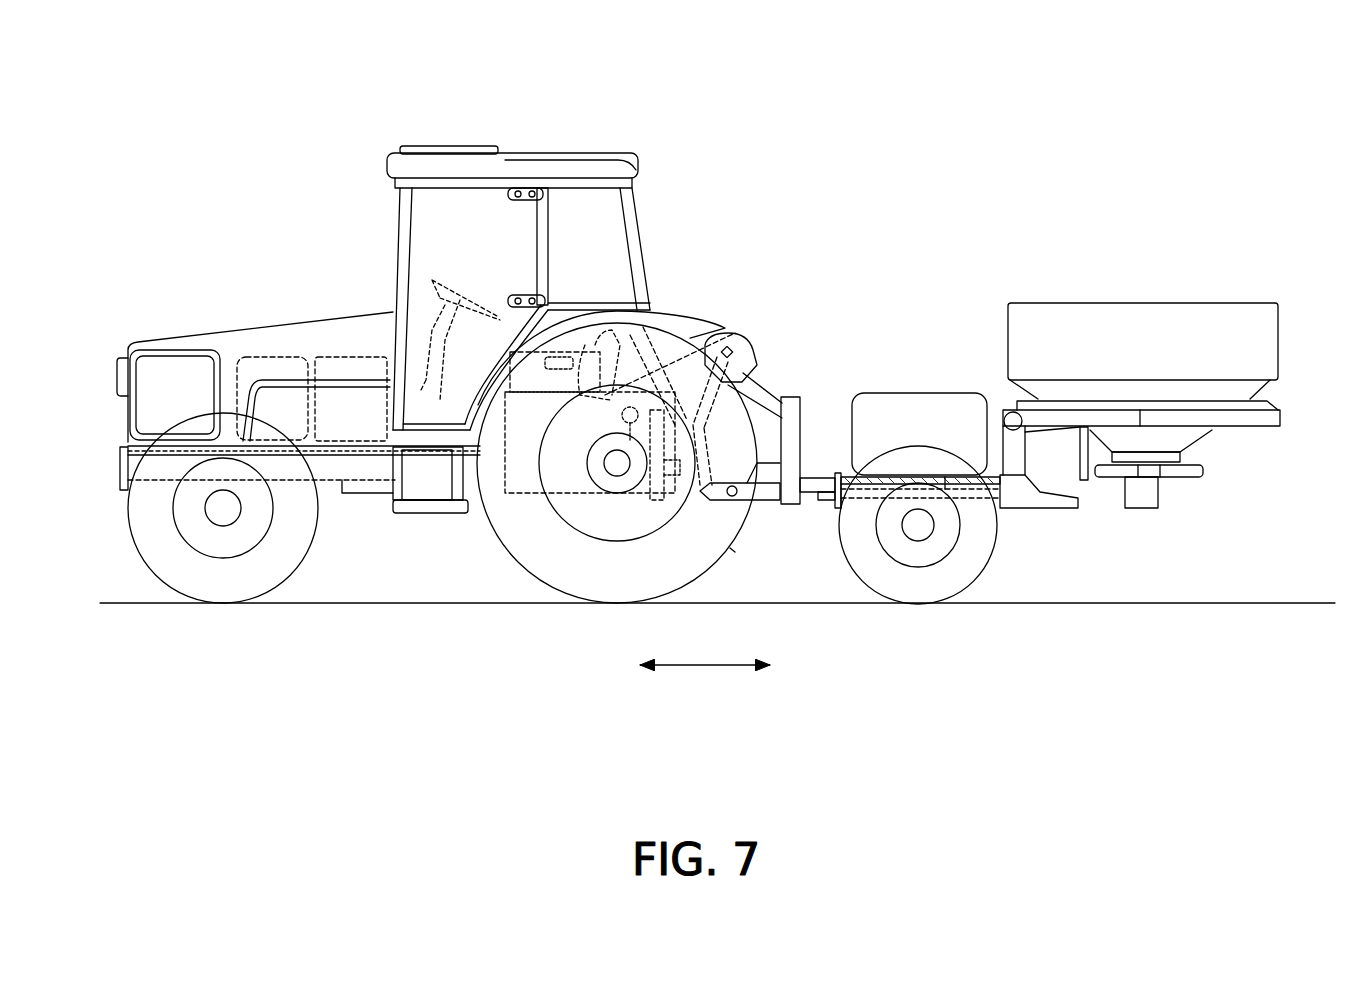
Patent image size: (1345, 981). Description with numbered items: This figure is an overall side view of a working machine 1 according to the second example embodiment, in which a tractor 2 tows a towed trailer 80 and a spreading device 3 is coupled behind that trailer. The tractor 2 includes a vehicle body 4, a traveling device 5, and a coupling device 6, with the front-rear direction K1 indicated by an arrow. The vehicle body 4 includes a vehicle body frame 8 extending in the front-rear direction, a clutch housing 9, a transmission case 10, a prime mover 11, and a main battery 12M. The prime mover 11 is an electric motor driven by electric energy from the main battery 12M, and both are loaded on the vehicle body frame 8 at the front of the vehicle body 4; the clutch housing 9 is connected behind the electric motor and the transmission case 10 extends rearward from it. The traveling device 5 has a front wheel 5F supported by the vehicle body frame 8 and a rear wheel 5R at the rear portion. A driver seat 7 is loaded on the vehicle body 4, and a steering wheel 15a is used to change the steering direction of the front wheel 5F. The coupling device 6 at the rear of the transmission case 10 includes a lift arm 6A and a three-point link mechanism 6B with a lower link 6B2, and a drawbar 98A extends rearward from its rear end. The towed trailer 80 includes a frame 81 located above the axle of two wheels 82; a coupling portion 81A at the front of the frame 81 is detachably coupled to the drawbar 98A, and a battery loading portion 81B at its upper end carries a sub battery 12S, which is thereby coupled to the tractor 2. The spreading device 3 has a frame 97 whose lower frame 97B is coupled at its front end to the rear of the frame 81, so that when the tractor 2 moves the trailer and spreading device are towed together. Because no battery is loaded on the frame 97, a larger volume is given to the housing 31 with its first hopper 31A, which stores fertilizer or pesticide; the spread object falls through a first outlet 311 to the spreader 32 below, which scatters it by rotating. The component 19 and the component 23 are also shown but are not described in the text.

The working machine 1 is at (782, 133).
The tractor 2 is at (479, 412).
The spreading device 3 is at (1062, 394).
The vehicle body 4 is at (232, 332).
The traveling device 5 is at (732, 550).
The front wheel 5F is at (295, 573).
The rear wheel 5R is at (549, 596).
The coupling device 6 is at (724, 396).
The lift arm 6A is at (632, 395).
The three-point link mechanism 6B is at (680, 400).
The lower link 6B2 is at (722, 512).
The driver seat 7 is at (615, 300).
The vehicle body frame 8 is at (345, 487).
The clutch housing 9 is at (430, 500).
The transmission case 10 is at (510, 522).
The prime mover 11 is at (336, 357).
The main battery 12M is at (280, 355).
The sub battery 12S is at (906, 393).
The steering wheel 15a is at (415, 300).
The shift lever 19 is at (640, 520).
The motor 23 is at (1153, 508).
The housing 31 is at (1154, 313).
The first hopper 31A is at (1166, 303).
The spreader 32 is at (1146, 501).
The towed trailer 80 is at (903, 468).
The frame 81 is at (1000, 477).
The coupling portion 81A is at (841, 490).
The battery loading portion 81B is at (946, 477).
The wheels 82 is at (880, 572).
The frame 97 is at (1266, 427).
The lower frame 97B is at (1026, 498).
The drawbar 98A is at (806, 478).
The first outlet 311 is at (1120, 478).
The front-rear direction K1 is at (705, 668).